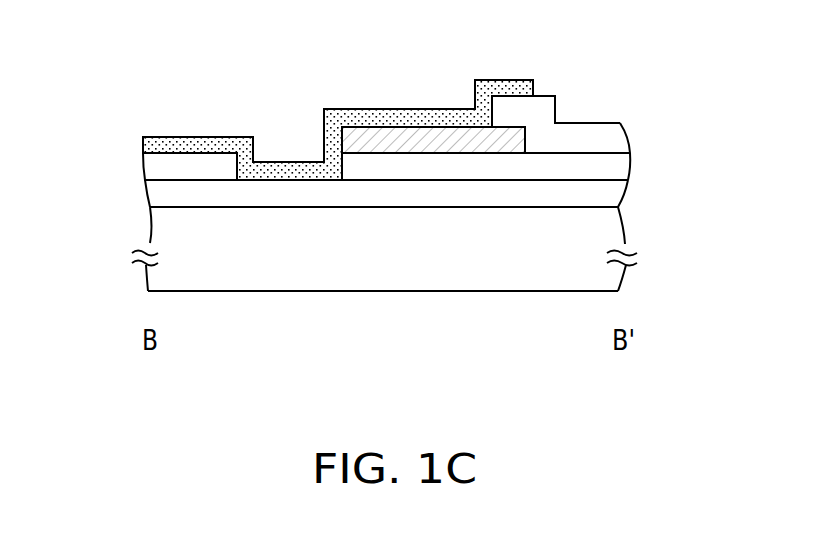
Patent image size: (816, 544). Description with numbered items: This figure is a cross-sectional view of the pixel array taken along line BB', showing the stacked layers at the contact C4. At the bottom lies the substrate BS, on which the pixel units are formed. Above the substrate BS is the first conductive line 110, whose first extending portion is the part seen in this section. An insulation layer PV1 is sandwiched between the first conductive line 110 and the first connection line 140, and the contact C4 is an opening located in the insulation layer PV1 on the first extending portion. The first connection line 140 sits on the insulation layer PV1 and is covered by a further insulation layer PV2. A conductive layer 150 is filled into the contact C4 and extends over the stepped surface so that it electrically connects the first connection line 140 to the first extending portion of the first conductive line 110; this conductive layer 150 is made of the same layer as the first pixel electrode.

The conductive layer 150 is at (160, 146).
The contact C4 is at (238, 158).
The first connection line 140 is at (427, 140).
The insulation layer PV2 is at (587, 140).
The insulation layer PV1 is at (587, 168).
The first conductive line 110 is at (587, 193).
The substrate BS is at (592, 277).